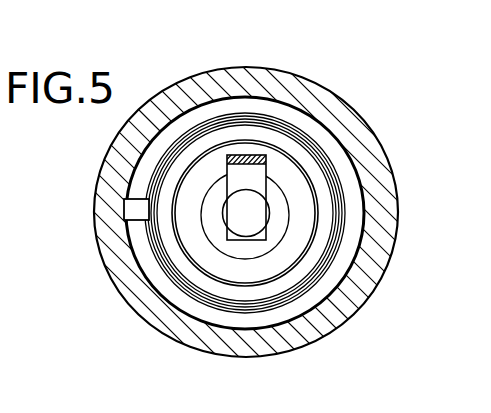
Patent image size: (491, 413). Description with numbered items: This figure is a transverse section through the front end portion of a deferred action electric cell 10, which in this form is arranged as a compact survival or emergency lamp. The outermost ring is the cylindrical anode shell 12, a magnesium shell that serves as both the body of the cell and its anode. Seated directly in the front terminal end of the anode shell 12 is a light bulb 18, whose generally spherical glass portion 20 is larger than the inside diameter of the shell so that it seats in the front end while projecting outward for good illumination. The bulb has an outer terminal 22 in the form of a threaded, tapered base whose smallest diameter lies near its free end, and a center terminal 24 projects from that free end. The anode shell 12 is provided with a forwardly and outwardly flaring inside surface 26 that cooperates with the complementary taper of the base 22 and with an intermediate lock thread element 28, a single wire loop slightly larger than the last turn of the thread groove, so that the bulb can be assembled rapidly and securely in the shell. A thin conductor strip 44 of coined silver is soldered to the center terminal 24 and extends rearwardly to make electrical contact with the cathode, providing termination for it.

The deferred action electric cell 10 is at (333, 95).
The cylindrical anode shell 12 is at (270, 70).
The light bulb 18 is at (306, 170).
The spherical glass portion 20 is at (245, 215).
The outer terminal 22 is at (168, 243).
The center terminal 24 is at (246, 226).
The flaring inside surface 26 is at (161, 300).
The lock thread element 28 is at (127, 187).
The conductor strip 44 is at (246, 155).